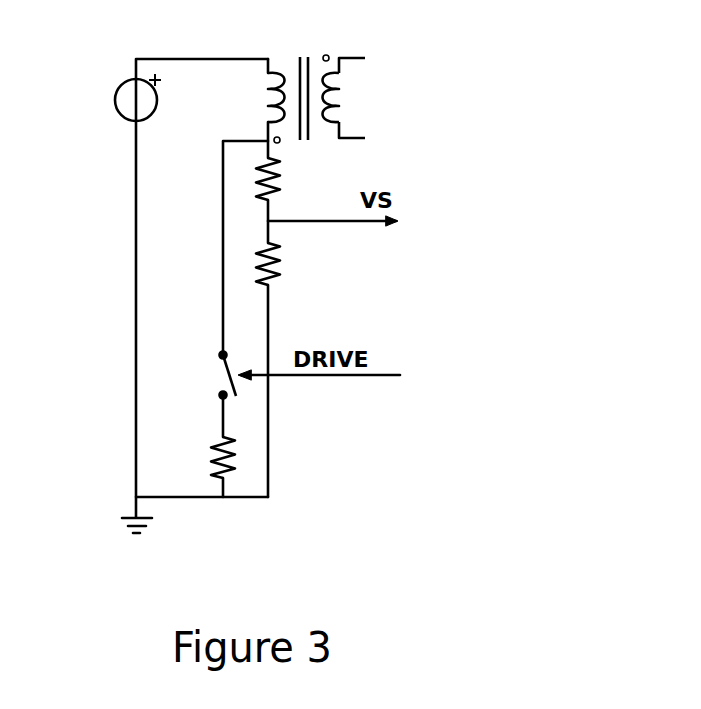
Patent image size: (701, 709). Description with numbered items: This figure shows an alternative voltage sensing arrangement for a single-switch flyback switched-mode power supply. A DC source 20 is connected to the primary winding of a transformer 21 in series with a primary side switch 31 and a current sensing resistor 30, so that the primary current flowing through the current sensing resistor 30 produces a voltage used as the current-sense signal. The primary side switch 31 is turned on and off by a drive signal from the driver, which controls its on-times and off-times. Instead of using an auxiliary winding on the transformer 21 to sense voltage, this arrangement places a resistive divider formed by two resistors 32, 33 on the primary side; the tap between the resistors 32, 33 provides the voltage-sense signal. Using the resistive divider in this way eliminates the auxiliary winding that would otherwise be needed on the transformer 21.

The DC source 20 is at (121, 97).
The transformer 21 is at (316, 85).
The current sensing resistor 30 is at (240, 458).
The primary side switch 31 is at (213, 375).
The resistor 32 is at (285, 179).
The resistor 33 is at (285, 264).